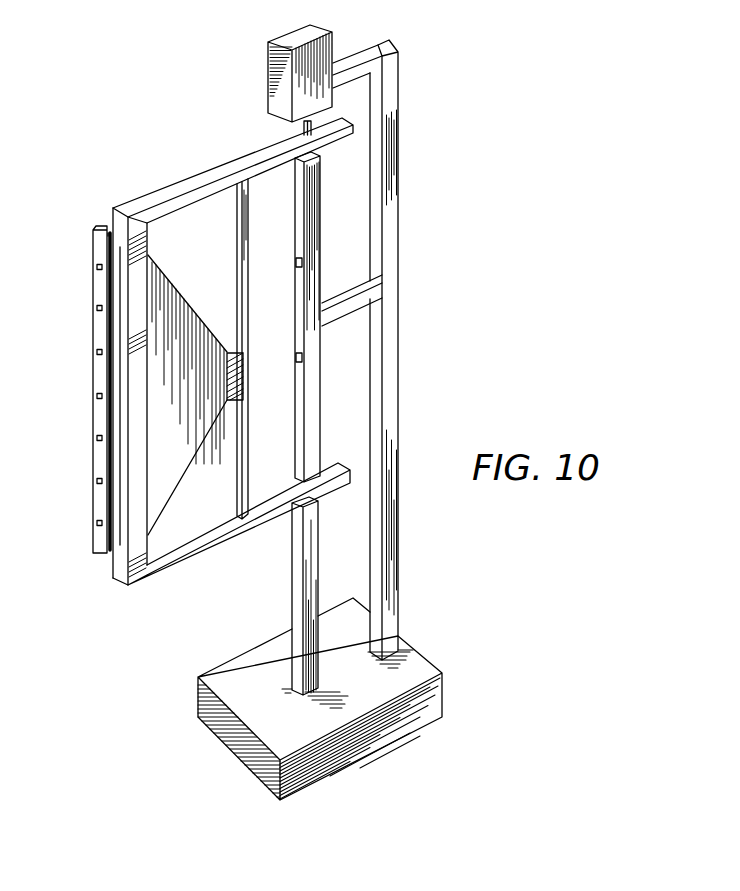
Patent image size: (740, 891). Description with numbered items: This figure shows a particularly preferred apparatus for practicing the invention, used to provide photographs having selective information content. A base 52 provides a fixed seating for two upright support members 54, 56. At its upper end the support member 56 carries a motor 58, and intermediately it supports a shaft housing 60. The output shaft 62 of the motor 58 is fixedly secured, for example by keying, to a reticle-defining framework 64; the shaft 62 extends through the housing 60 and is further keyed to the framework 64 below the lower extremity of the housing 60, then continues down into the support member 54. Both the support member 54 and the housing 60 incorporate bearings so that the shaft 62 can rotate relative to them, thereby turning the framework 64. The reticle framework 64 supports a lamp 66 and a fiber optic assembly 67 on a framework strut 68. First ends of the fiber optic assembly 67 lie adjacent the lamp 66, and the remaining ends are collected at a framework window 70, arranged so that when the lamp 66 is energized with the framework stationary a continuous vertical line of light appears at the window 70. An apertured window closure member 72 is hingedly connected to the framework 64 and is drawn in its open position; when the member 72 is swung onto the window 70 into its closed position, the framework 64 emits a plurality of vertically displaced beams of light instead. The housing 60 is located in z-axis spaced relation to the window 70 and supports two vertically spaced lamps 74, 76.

The base 52 is at (377, 742).
The support member 54 is at (297, 577).
The support member 56 is at (390, 387).
The motor 58 is at (287, 39).
The shaft housing 60 is at (318, 199).
The output shaft 62 is at (301, 132).
The reticle-defining framework 64 is at (177, 190).
The lamp 66 is at (233, 352).
The fiber optic assembly 67 is at (197, 448).
The framework strut 68 is at (237, 242).
The framework window 70 is at (118, 548).
The apertured window closure member 72 is at (93, 242).
The lamp 74 is at (296, 262).
The lamp 76 is at (296, 358).